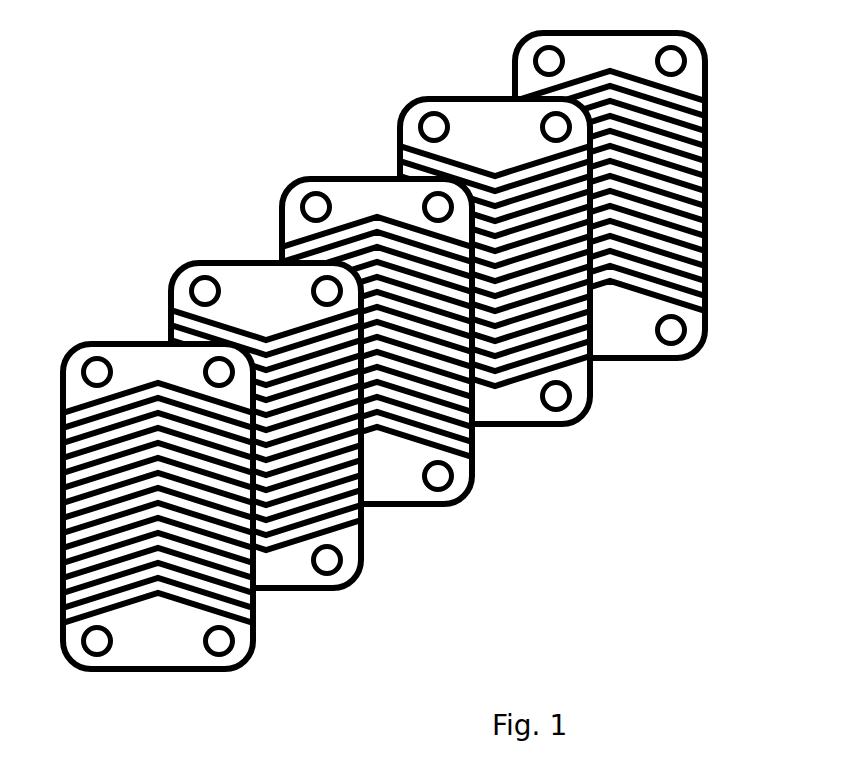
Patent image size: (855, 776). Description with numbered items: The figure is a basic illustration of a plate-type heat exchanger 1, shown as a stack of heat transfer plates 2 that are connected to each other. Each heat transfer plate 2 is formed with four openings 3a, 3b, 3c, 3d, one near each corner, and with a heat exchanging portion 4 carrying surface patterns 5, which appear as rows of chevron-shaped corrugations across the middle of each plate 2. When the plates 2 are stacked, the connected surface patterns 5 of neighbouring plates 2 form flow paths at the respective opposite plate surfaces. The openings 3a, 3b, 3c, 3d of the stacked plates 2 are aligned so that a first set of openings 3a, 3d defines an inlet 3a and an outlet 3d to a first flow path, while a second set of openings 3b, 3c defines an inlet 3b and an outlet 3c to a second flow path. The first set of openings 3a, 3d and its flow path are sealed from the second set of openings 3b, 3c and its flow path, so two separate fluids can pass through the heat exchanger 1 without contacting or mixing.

The heat exchanger 1 is at (170, 122).
The heat transfer plate 2 is at (453, 498).
The opening 3a is at (94, 372).
The opening 3b is at (212, 364).
The opening 3c is at (227, 637).
The opening 3d is at (105, 642).
The heat exchanging portion 4 is at (698, 250).
The surface patterns 5 is at (623, 272).